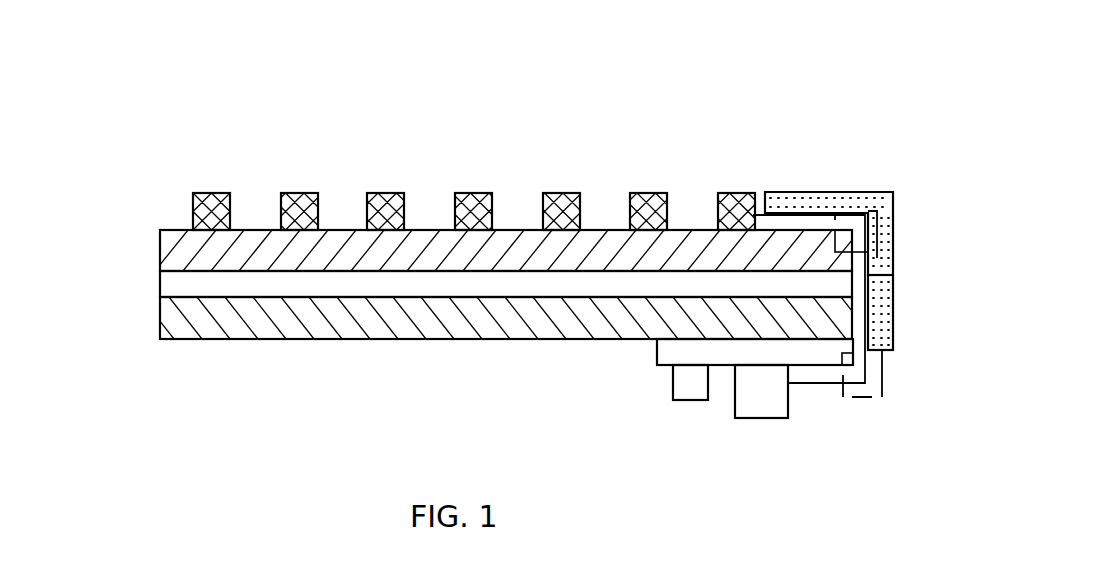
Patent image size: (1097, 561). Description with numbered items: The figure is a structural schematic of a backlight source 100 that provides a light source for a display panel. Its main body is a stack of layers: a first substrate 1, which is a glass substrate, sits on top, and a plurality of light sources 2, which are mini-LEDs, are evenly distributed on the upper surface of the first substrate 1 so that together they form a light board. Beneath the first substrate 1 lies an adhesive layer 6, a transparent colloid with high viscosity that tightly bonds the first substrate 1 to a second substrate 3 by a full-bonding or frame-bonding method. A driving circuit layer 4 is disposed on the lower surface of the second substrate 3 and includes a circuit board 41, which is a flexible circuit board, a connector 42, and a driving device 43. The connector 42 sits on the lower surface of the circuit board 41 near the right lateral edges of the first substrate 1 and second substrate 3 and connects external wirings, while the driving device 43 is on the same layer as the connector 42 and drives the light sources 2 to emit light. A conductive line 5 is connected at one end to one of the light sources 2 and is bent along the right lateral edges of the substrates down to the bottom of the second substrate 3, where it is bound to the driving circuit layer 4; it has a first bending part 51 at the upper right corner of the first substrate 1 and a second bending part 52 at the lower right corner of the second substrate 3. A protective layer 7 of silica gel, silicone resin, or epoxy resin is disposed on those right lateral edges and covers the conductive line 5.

The backlight source 100 is at (228, 76).
The first substrate 1 is at (160, 253).
The adhesive layer 6 is at (160, 283).
The second substrate 3 is at (160, 320).
The light sources 2 is at (395, 195).
The protective layer 7 is at (883, 200).
The conductive line 5 is at (893, 272).
The first bending part 51 is at (883, 232).
The second bending part 52 is at (882, 373).
The driving circuit layer 4 is at (582, 352).
The circuit board 41 is at (660, 362).
The driving device 43 is at (690, 383).
The connector 42 is at (762, 390).